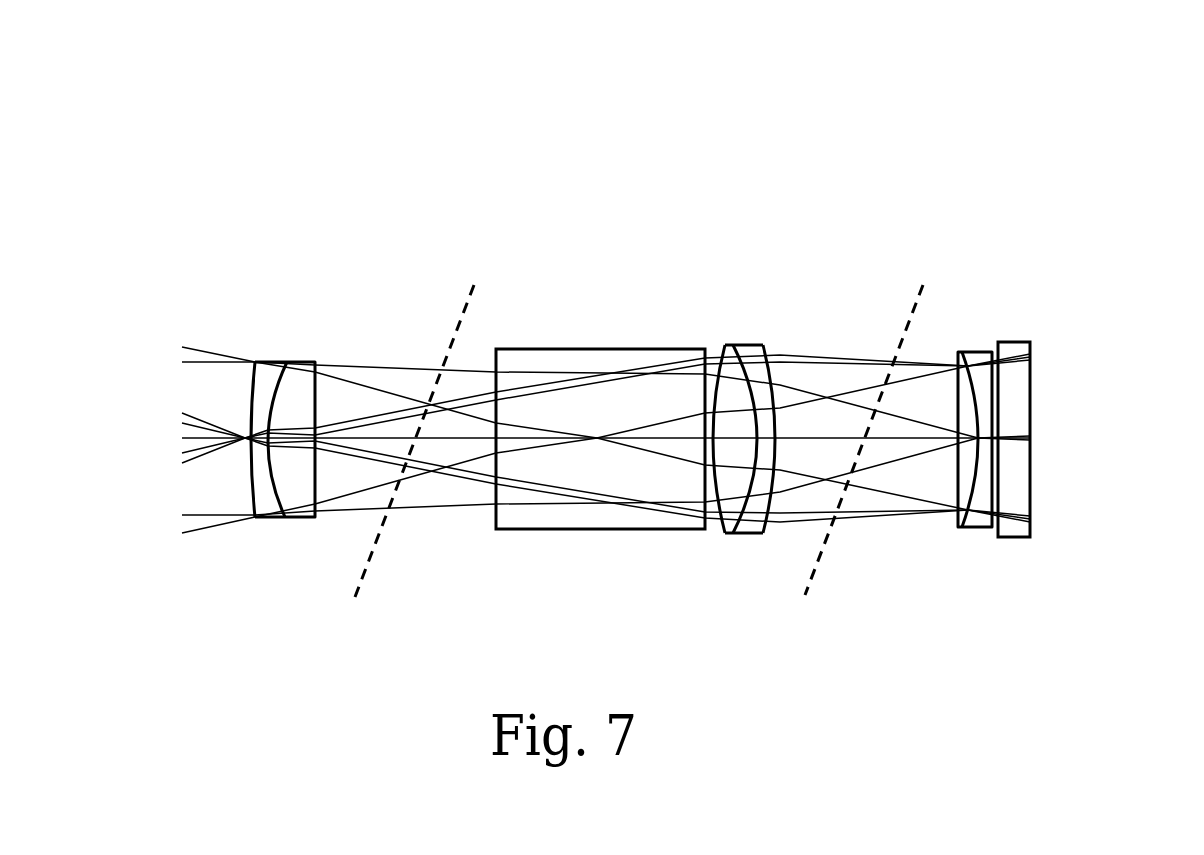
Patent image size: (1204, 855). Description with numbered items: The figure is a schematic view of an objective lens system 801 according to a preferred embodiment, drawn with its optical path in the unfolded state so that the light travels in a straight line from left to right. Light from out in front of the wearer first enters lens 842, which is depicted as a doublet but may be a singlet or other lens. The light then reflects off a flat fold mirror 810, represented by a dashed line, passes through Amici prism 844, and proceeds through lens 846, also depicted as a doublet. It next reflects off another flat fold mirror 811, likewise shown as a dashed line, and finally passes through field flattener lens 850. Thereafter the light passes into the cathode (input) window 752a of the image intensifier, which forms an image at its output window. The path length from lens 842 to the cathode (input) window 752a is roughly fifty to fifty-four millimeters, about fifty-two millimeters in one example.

The objective lens system 801 is at (636, 154).
The lens 842 is at (287, 348).
The flat fold mirror 810 is at (455, 333).
The Amici prism 844 is at (575, 348).
The lens 846 is at (747, 339).
The flat fold mirror 811 is at (905, 333).
The field flattener lens 850 is at (977, 352).
The cathode (input) window 752a is at (1030, 412).